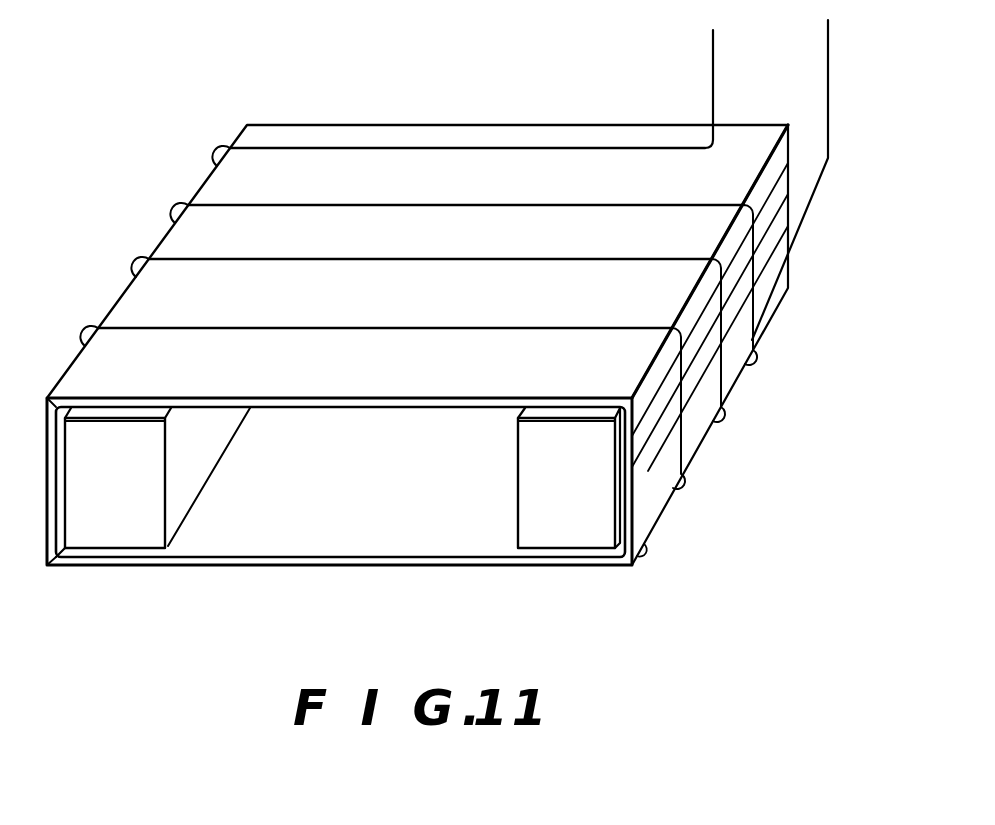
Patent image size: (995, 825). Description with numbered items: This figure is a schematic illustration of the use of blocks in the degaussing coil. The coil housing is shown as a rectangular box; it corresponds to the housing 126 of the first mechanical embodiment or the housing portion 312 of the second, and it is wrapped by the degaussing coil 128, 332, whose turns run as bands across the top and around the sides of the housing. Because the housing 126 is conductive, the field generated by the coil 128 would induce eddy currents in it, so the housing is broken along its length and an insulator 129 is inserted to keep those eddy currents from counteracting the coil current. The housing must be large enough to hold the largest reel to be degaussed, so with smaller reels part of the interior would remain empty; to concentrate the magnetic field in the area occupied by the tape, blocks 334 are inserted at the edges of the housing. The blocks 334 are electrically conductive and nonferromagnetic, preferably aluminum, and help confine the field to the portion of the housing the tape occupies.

The housing 126 is at (121, 567).
The housing portion 312 is at (340, 514).
The coil 128 is at (703, 432).
The coil 332 is at (470, 266).
The insulator 129 is at (665, 388).
The blocks 334 is at (147, 508).